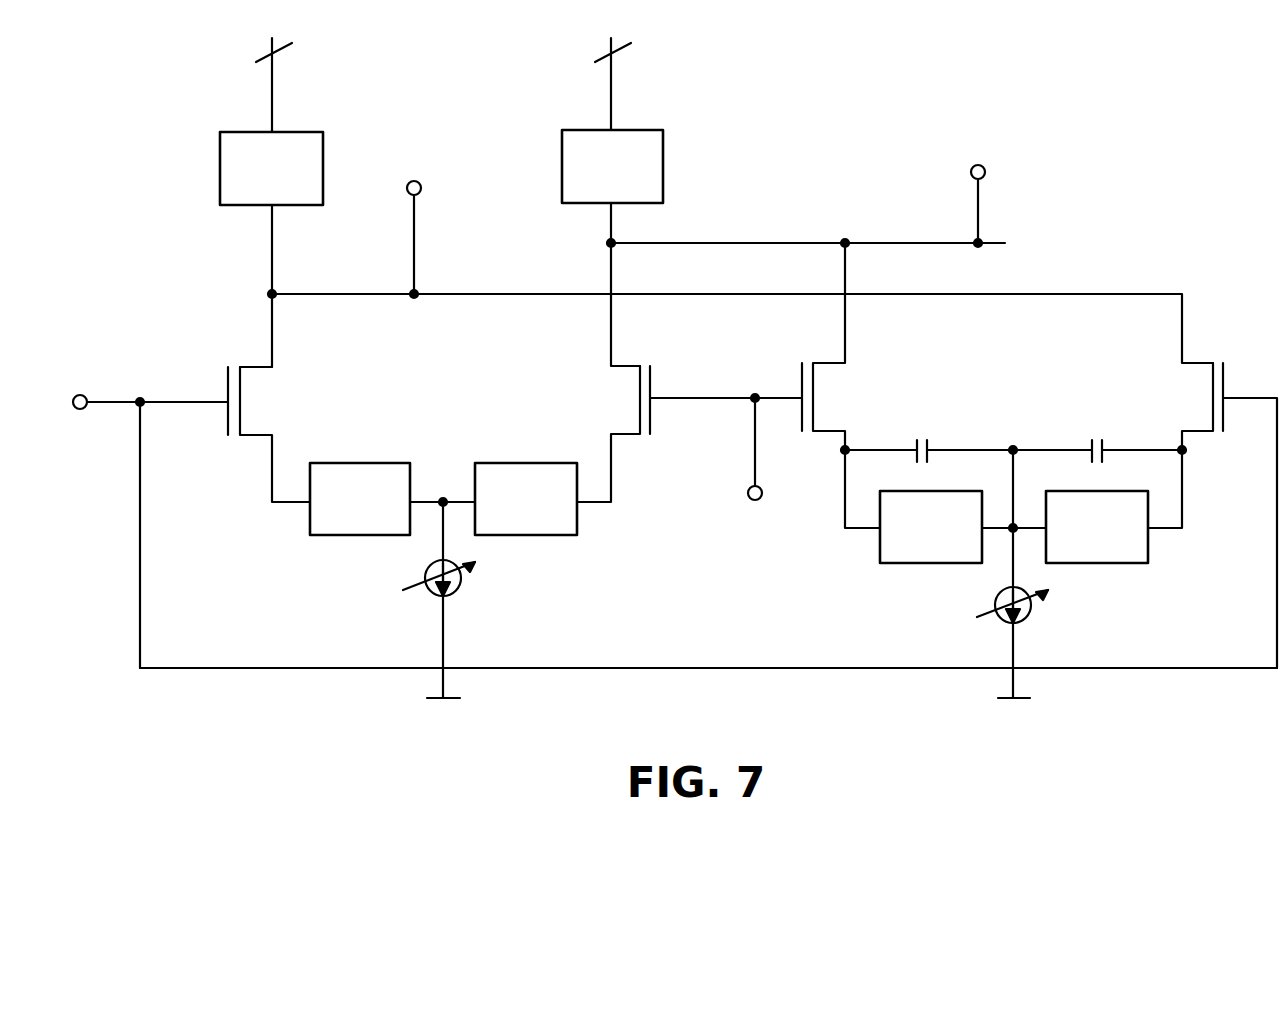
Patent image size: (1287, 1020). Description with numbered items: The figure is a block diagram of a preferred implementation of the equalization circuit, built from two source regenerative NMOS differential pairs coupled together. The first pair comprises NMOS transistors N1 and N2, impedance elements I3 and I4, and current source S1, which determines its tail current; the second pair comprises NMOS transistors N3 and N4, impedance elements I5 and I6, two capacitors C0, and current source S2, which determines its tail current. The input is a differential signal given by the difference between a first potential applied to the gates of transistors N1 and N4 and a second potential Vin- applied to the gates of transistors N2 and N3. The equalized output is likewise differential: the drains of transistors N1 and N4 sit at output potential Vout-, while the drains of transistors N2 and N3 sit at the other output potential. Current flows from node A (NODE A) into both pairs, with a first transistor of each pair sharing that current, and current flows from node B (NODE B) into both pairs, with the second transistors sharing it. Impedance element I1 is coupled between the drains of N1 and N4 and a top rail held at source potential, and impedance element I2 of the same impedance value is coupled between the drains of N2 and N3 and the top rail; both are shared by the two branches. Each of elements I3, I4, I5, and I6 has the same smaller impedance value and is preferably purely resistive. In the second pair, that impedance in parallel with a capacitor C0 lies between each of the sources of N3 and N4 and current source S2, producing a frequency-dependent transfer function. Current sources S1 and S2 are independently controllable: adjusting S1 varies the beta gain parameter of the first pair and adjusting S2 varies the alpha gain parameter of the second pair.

The impedance element I1 is at (323, 142).
The impedance element I2 is at (663, 157).
The impedance element I3 is at (345, 535).
The impedance element I4 is at (561, 535).
The impedance element I5 is at (880, 547).
The impedance element I6 is at (1130, 563).
The NMOS transistor N1 is at (225, 434).
The NMOS transistor N2 is at (666, 434).
The NMOS transistor N3 is at (841, 385).
The NMOS transistor N4 is at (1212, 515).
The current source S1 is at (428, 597).
The current source S2 is at (997, 588).
The capacitor C0 is at (1013, 432).
The node A NODE A is at (272, 294).
The node B NODE B is at (611, 243).
The second input potential Vin- is at (768, 464).
The output potential Vout- is at (420, 221).